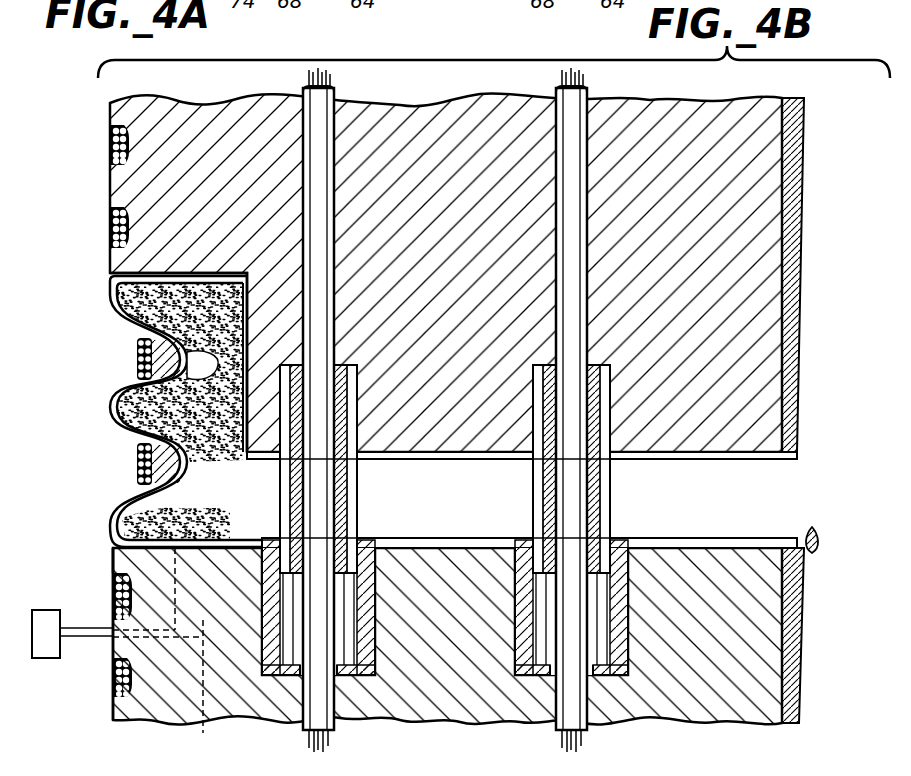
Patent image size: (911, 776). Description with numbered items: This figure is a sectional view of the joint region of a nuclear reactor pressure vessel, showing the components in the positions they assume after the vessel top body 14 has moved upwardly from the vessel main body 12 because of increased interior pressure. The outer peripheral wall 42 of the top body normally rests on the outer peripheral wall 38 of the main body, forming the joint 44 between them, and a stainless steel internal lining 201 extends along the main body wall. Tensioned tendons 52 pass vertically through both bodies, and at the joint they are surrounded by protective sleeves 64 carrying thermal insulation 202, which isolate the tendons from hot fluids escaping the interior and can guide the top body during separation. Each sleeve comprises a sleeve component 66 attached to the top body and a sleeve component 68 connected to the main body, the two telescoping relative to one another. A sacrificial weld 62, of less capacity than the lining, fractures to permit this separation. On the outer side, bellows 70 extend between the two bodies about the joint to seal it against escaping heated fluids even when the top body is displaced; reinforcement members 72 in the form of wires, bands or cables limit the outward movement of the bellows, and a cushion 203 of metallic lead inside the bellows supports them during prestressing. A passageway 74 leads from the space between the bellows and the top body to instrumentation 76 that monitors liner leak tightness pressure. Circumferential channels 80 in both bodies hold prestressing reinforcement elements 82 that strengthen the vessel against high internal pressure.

The vessel main body 12 is at (112, 719).
The vessel top body 14 is at (808, 266).
The outer peripheral wall 38 is at (113, 712).
The outer peripheral wall 42 is at (113, 273).
The joint 44 is at (735, 540).
The tendons 52 is at (588, 92).
The sacrificial weld 62 is at (815, 527).
The protective sleeves 64 is at (612, 533).
The sleeve component 66 is at (602, 505).
The sleeve components 68 is at (522, 676).
The bellows 70 is at (113, 405).
The reinforcement members 72 is at (135, 445).
The passageway 74 is at (203, 733).
The instrumentation 76 is at (42, 610).
The channels 80 is at (113, 675).
The reinforcement elements 82 is at (113, 600).
The internal lining 201 is at (803, 628).
The thermal insulation 202 is at (625, 618).
The cushion 203 is at (137, 465).